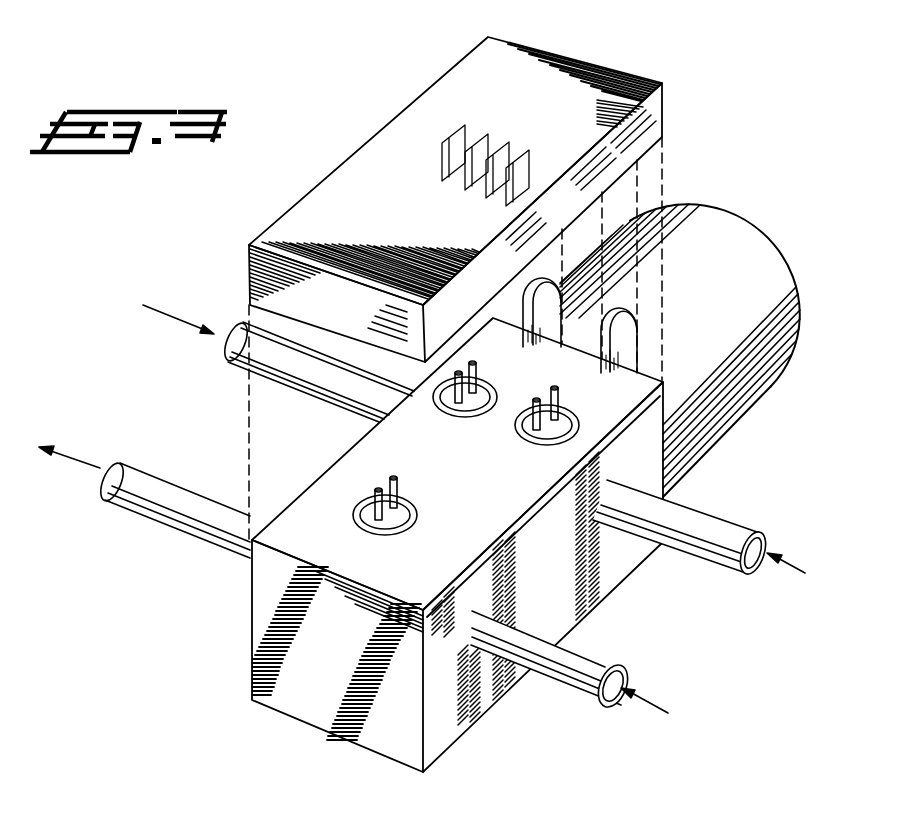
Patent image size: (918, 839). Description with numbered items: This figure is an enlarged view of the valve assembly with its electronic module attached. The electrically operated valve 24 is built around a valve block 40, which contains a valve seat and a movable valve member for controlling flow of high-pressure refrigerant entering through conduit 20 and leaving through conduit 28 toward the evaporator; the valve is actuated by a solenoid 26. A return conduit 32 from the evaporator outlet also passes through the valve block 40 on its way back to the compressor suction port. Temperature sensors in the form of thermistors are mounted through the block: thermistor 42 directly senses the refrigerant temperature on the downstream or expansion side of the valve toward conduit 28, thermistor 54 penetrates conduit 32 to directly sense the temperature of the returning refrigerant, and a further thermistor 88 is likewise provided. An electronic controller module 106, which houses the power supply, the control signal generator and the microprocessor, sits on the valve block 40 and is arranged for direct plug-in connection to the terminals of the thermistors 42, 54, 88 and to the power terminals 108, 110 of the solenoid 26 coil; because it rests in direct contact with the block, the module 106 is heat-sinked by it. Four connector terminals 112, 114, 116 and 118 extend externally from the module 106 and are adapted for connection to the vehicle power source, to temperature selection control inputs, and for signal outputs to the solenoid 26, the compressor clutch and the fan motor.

The conduit 20 is at (228, 365).
The electrically operated valve 24 is at (797, 262).
The solenoid 26 is at (723, 433).
The conduit 28 is at (745, 521).
The conduit 32 is at (118, 490).
The valve block 40 is at (252, 630).
The thermistor 42 is at (535, 448).
The thermistor 54 is at (355, 522).
The thermistor 88 is at (490, 378).
The electronic controller module 106 is at (645, 65).
The power terminal 108 is at (638, 330).
The power terminal 110 is at (560, 323).
The connector terminal 112 is at (526, 152).
The connector terminal 114 is at (462, 186).
The connector terminal 116 is at (496, 142).
The connector terminal 118 is at (440, 152).